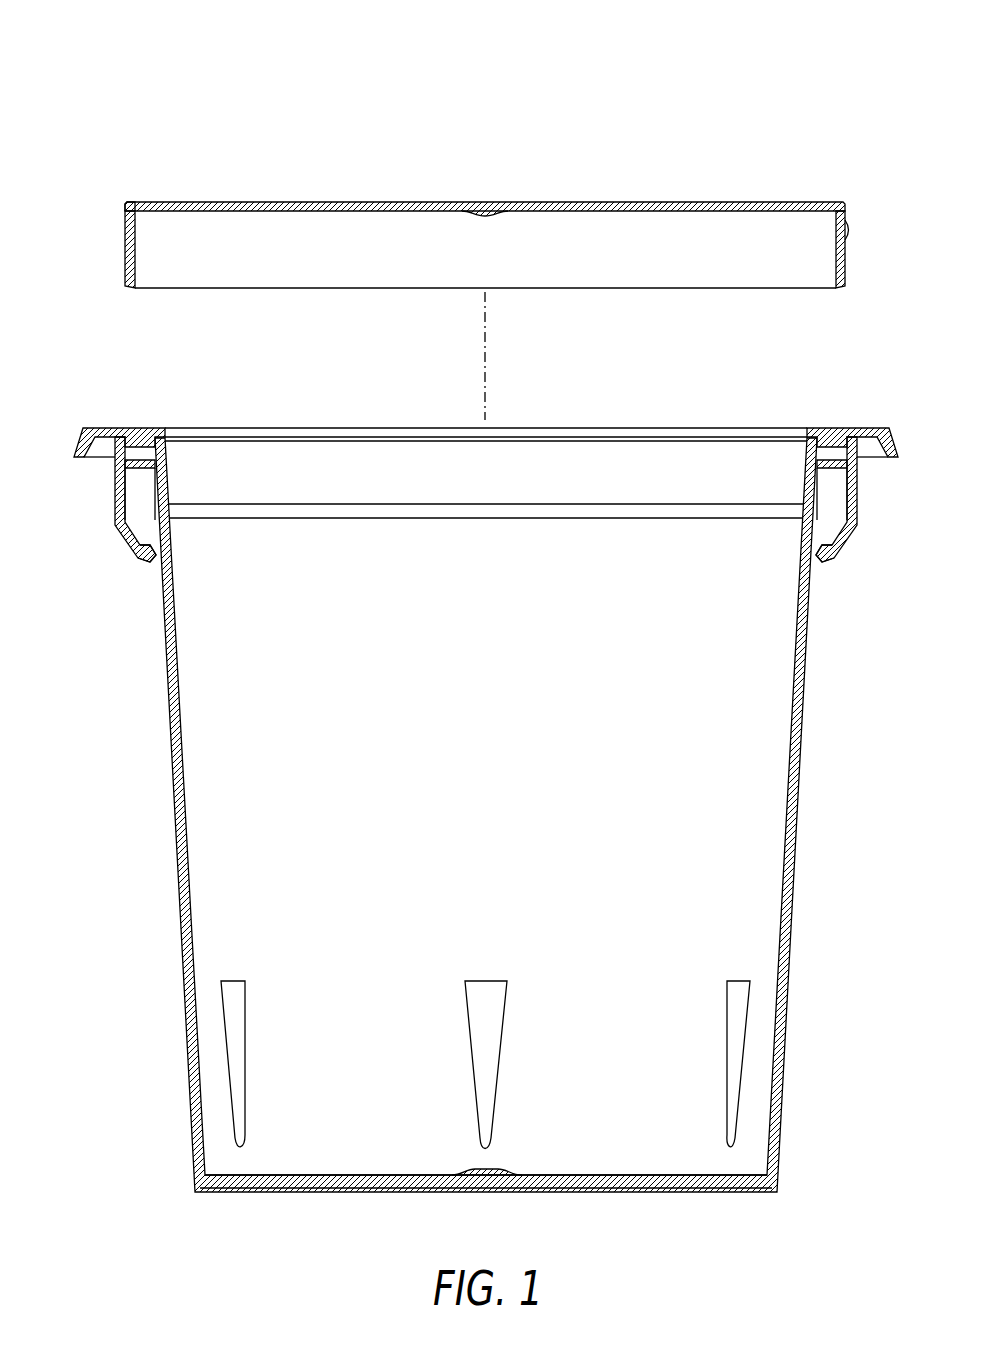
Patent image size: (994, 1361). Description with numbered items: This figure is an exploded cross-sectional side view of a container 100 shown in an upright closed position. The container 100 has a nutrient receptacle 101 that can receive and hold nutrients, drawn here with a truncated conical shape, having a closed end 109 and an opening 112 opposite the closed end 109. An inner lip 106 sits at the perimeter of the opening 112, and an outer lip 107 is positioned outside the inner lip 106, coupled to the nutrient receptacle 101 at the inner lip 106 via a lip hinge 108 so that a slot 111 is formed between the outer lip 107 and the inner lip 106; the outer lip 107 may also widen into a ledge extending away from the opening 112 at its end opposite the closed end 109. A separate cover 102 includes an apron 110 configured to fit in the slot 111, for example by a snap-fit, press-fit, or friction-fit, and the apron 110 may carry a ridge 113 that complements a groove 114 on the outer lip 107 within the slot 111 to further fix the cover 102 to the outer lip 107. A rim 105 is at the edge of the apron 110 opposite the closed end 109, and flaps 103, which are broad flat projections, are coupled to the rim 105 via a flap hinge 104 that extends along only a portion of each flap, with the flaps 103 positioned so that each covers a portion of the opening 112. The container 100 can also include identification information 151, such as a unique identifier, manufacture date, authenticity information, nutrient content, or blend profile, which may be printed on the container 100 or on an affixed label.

The container 100 is at (775, 74).
The nutrient receptacle 101 is at (800, 737).
The cover 102 is at (327, 194).
The flaps 103 is at (695, 203).
The flap hinge 104 is at (485, 205).
The rim 105 is at (127, 203).
The inner lip 106 is at (143, 452).
The outer lip 107 is at (95, 430).
The lip hinge 108 is at (140, 548).
The closed end 109 is at (278, 1192).
The apron 110 is at (125, 270).
The slot 111 is at (832, 485).
The opening 112 is at (576, 563).
The ridge 113 is at (125, 232).
The groove 114 is at (128, 448).
The identification information 151 is at (557, 1192).